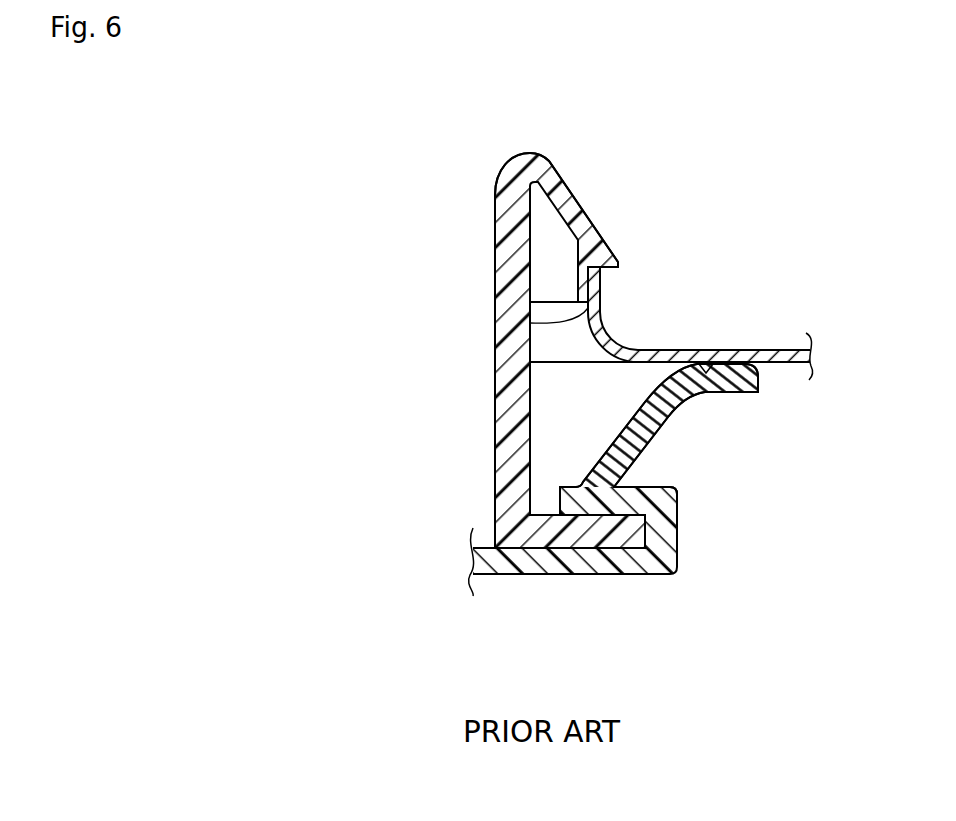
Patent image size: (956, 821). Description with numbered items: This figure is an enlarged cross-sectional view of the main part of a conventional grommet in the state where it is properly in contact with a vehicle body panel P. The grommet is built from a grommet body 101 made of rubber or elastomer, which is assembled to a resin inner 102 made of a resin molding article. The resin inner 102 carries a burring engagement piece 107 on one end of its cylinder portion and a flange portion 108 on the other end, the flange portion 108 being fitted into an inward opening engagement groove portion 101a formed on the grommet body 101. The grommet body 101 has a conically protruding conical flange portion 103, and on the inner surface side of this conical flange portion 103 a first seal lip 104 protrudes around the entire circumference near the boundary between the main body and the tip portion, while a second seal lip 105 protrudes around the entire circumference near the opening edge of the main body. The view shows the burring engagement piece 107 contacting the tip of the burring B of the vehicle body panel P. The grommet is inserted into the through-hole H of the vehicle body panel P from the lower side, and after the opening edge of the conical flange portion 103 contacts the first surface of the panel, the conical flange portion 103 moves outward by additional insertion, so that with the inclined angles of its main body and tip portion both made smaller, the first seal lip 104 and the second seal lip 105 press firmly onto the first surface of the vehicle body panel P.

The grommet body 101 is at (615, 590).
The inward opening engagement groove portion 101a is at (546, 539).
The resin inner 102 is at (482, 236).
The conical flange portion 103 is at (657, 423).
The first seal lip 104 is at (708, 368).
The second seal lip 105 is at (748, 372).
The burring engagement piece 107 is at (563, 170).
The flange portion 108 is at (643, 538).
The burring B is at (530, 323).
The through-hole H is at (551, 350).
The vehicle body panel P is at (765, 348).